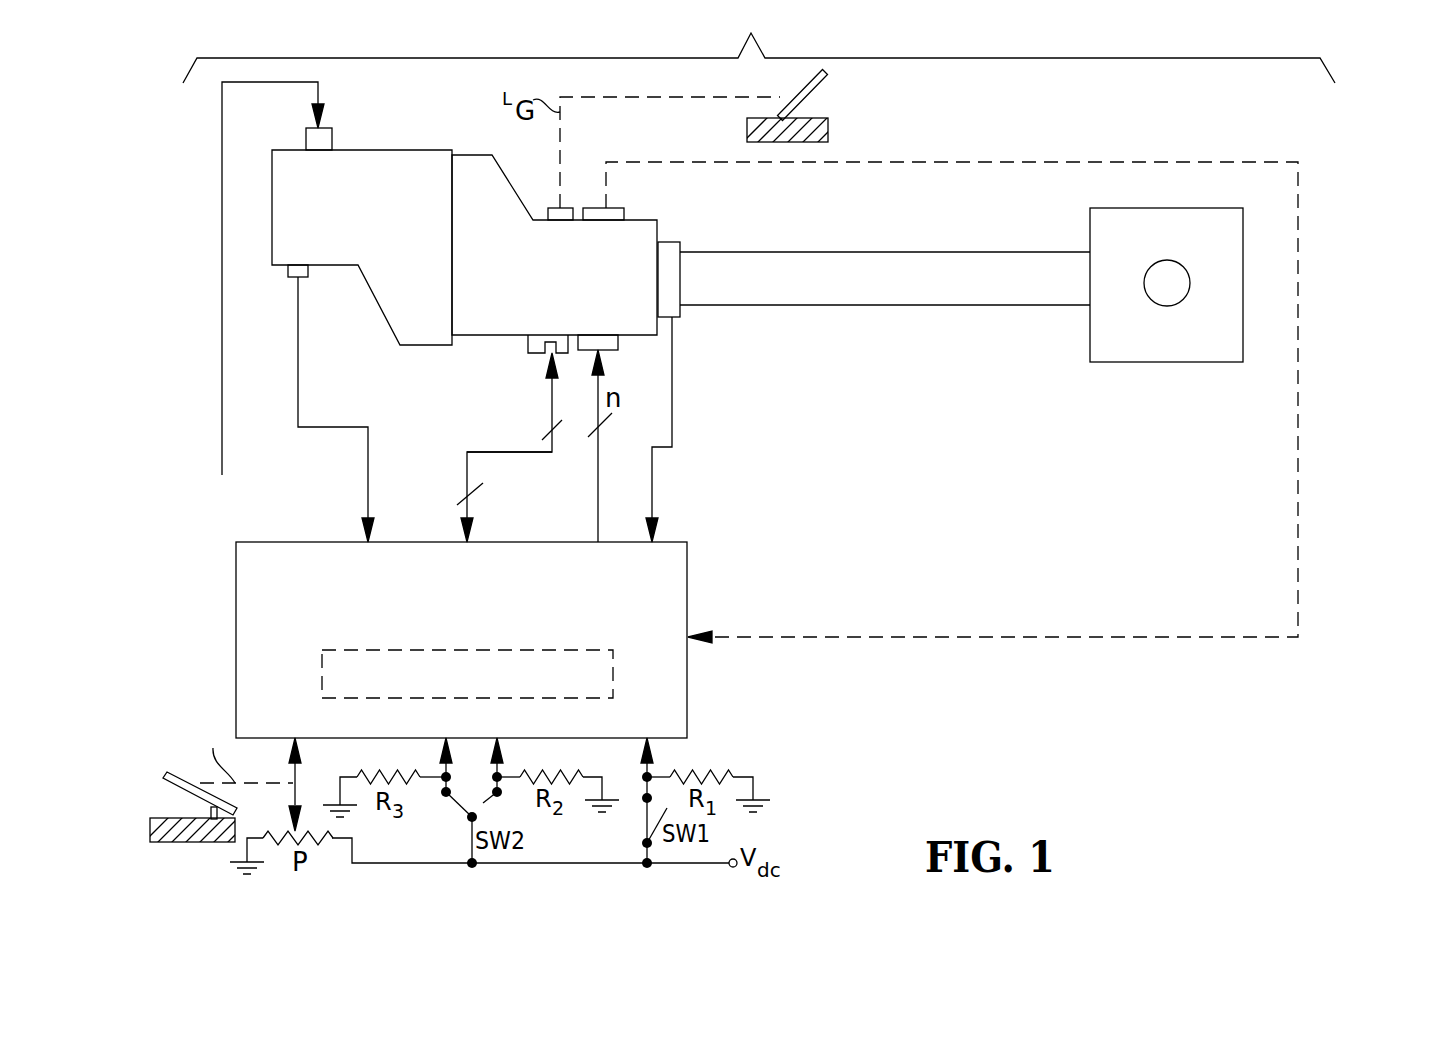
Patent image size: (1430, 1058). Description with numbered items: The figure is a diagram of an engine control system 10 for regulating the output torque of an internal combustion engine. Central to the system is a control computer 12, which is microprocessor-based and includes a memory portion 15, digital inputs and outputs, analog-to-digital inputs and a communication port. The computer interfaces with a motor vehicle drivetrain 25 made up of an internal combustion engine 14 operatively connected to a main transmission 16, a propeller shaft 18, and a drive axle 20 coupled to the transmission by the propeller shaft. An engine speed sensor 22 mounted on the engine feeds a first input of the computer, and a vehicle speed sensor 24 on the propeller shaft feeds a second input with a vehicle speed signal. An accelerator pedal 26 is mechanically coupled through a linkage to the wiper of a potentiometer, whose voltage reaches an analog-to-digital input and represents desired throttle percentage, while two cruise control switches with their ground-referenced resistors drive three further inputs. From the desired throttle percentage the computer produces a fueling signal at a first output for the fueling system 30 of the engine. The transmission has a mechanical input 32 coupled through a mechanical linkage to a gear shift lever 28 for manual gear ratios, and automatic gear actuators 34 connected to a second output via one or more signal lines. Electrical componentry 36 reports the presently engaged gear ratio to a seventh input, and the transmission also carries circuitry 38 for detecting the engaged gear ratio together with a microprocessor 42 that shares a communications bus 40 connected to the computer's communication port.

The engine control system 10 is at (1308, 400).
The control computer 12 is at (235, 637).
The internal combustion engine 14 is at (420, 149).
The memory portion 15 is at (613, 668).
The main transmission 16 is at (475, 155).
The propeller shaft 18 is at (918, 252).
The drive axle 20 is at (1178, 362).
The engine speed sensor 22 is at (290, 278).
The vehicle speed sensor 24 is at (675, 242).
The motor vehicle drivetrain 25 is at (759, 45).
The accelerator pedal 26 is at (178, 775).
The gear shift lever 28 is at (827, 83).
The fueling system 30 is at (325, 127).
The mechanical input 32 is at (555, 208).
The automatic gear actuators 34 is at (618, 350).
The electrical componentry 36 is at (592, 208).
The circuitry 38 is at (528, 342).
The communications bus 40 is at (467, 452).
The microprocessor 42 is at (543, 357).